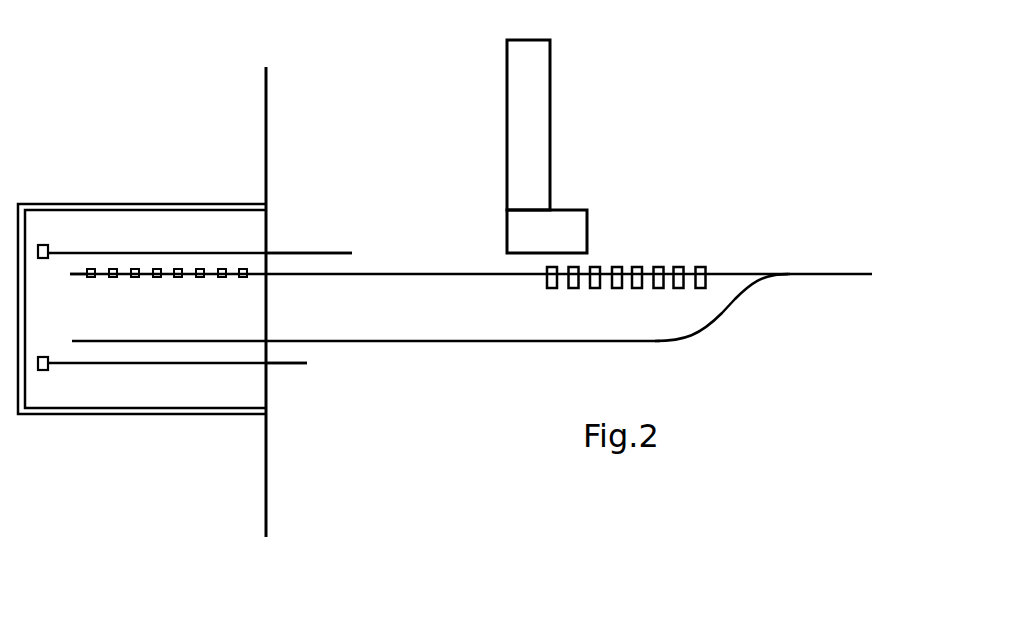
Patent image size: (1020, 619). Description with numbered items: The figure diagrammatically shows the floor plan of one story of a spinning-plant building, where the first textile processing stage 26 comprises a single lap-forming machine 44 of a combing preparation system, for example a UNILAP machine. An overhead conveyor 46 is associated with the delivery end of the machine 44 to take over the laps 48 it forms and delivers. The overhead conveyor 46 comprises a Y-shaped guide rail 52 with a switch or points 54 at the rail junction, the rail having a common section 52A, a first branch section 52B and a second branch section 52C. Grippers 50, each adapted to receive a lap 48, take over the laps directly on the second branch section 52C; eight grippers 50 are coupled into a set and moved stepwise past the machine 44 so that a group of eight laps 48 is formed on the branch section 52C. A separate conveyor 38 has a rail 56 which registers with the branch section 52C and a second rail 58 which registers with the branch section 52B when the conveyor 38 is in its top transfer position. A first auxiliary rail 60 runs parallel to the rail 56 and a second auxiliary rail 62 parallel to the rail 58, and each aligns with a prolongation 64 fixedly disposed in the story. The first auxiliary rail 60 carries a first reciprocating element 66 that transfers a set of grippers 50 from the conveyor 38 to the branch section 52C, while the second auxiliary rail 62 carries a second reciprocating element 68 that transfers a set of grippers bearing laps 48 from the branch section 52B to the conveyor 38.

The first textile processing stage 26 is at (639, 73).
The conveyor 38 is at (142, 178).
The lap-forming machine 44 is at (523, 119).
The overhead conveyor 46 is at (734, 309).
The laps 48 is at (681, 266).
The grippers 50 is at (200, 278).
The Y-shaped guide rail 52 is at (462, 317).
The common section 52A is at (841, 269).
The first branch section 52B is at (374, 336).
The second branch section 52C is at (409, 270).
The switch or points 54 is at (776, 269).
The rail 56 is at (79, 281).
The second rail 58 is at (139, 333).
The first auxiliary rail 60 is at (220, 250).
The second auxiliary rail 62 is at (205, 366).
The prolongation 64 is at (306, 252).
The first reciprocating element 66 is at (47, 241).
The second reciprocating element 68 is at (46, 374).